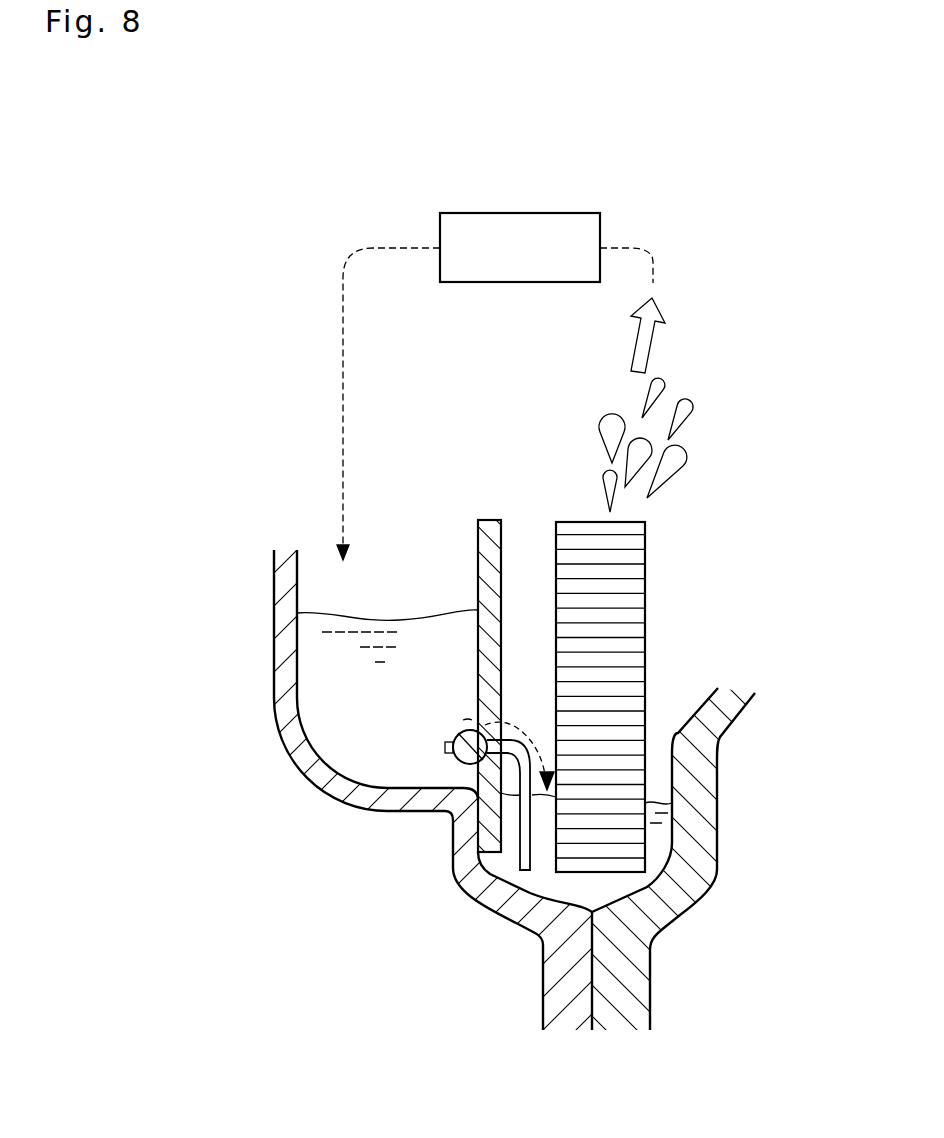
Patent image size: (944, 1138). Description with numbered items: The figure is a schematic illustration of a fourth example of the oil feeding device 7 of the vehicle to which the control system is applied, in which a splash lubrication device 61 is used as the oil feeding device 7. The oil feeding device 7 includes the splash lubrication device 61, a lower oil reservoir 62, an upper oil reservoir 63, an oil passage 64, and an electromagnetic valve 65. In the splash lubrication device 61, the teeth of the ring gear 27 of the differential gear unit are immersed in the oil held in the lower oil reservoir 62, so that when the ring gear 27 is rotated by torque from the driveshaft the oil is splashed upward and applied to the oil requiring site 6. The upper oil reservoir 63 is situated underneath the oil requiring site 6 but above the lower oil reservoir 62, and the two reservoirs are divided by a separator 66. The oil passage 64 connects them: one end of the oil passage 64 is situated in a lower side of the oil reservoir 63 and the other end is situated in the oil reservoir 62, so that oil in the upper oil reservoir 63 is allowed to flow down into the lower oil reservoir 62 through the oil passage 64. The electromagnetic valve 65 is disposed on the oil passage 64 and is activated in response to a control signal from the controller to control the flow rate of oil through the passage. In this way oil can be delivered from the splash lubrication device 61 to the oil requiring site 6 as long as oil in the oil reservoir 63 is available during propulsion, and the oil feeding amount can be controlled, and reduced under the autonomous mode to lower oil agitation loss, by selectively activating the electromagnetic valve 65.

The oil feeding device 7 is at (730, 172).
The oil requiring site 6 is at (522, 213).
The splash lubrication device 61 is at (788, 463).
The oil reservoir 62 is at (548, 884).
The oil reservoir 63 is at (315, 682).
The oil passage 64 is at (523, 860).
The electromagnetic valve 65 is at (453, 752).
The separator 66 is at (490, 527).
The ring gear 27 is at (676, 572).